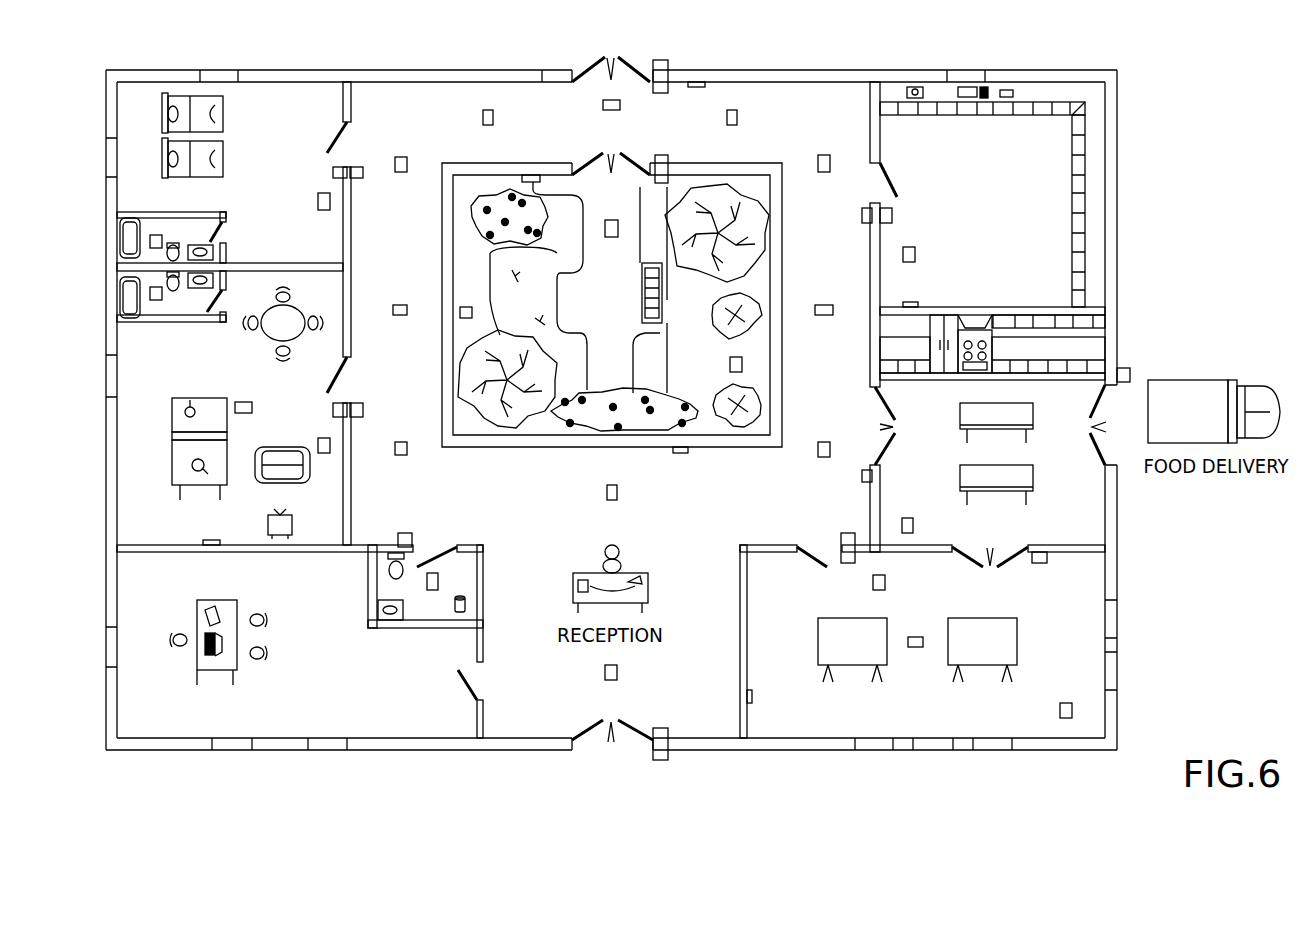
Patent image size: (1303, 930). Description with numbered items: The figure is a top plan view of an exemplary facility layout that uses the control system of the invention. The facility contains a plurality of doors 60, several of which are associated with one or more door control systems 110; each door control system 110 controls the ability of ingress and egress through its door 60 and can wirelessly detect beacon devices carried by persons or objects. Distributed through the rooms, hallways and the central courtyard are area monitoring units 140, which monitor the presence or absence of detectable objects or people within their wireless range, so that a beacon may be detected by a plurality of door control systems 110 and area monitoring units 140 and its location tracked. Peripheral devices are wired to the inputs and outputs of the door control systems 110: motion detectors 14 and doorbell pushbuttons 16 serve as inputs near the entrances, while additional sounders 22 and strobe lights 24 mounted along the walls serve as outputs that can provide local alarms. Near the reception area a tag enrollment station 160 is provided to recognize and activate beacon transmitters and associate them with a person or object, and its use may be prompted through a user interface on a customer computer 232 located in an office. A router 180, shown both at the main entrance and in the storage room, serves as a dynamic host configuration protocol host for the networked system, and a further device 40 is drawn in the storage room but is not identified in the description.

The motion detector 14 is at (653, 65).
The doorbell pushbutton 16 is at (662, 58).
The additional sounder 22 is at (703, 87).
The strobe light 24 is at (540, 179).
The hub device 40 is at (1001, 105).
The door 60 is at (592, 62).
The door control system 110 is at (356, 165).
The area monitoring unit 140 is at (483, 117).
The tag enrollment station 160 is at (577, 583).
The router 180 is at (670, 65).
The customer computer 232 is at (987, 103).